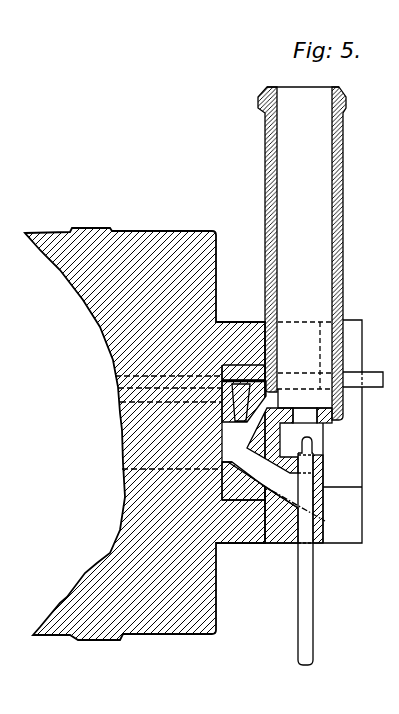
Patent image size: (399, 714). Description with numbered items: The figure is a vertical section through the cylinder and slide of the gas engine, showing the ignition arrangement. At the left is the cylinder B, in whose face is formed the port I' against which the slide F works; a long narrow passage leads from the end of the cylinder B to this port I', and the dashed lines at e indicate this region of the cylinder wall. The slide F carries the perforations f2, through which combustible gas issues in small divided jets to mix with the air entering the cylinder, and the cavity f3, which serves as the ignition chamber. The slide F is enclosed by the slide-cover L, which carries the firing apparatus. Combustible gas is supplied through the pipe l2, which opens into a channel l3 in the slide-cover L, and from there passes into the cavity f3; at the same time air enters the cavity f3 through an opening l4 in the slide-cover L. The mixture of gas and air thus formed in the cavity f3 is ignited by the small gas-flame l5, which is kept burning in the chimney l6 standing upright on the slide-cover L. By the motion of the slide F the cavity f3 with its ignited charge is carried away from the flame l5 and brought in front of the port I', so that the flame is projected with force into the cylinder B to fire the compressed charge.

The cylinder B is at (145, 434).
The port I' is at (226, 432).
The passage e is at (168, 420).
The perforations f2 is at (218, 386).
The cavity f3 is at (213, 456).
The slide F is at (243, 481).
The slide-cover L is at (276, 499).
The chimney l6 is at (302, 253).
The channel l3 is at (304, 365).
The pipe l2 is at (342, 371).
The small gas-flame l5 is at (313, 446).
The opening l4 is at (318, 500).